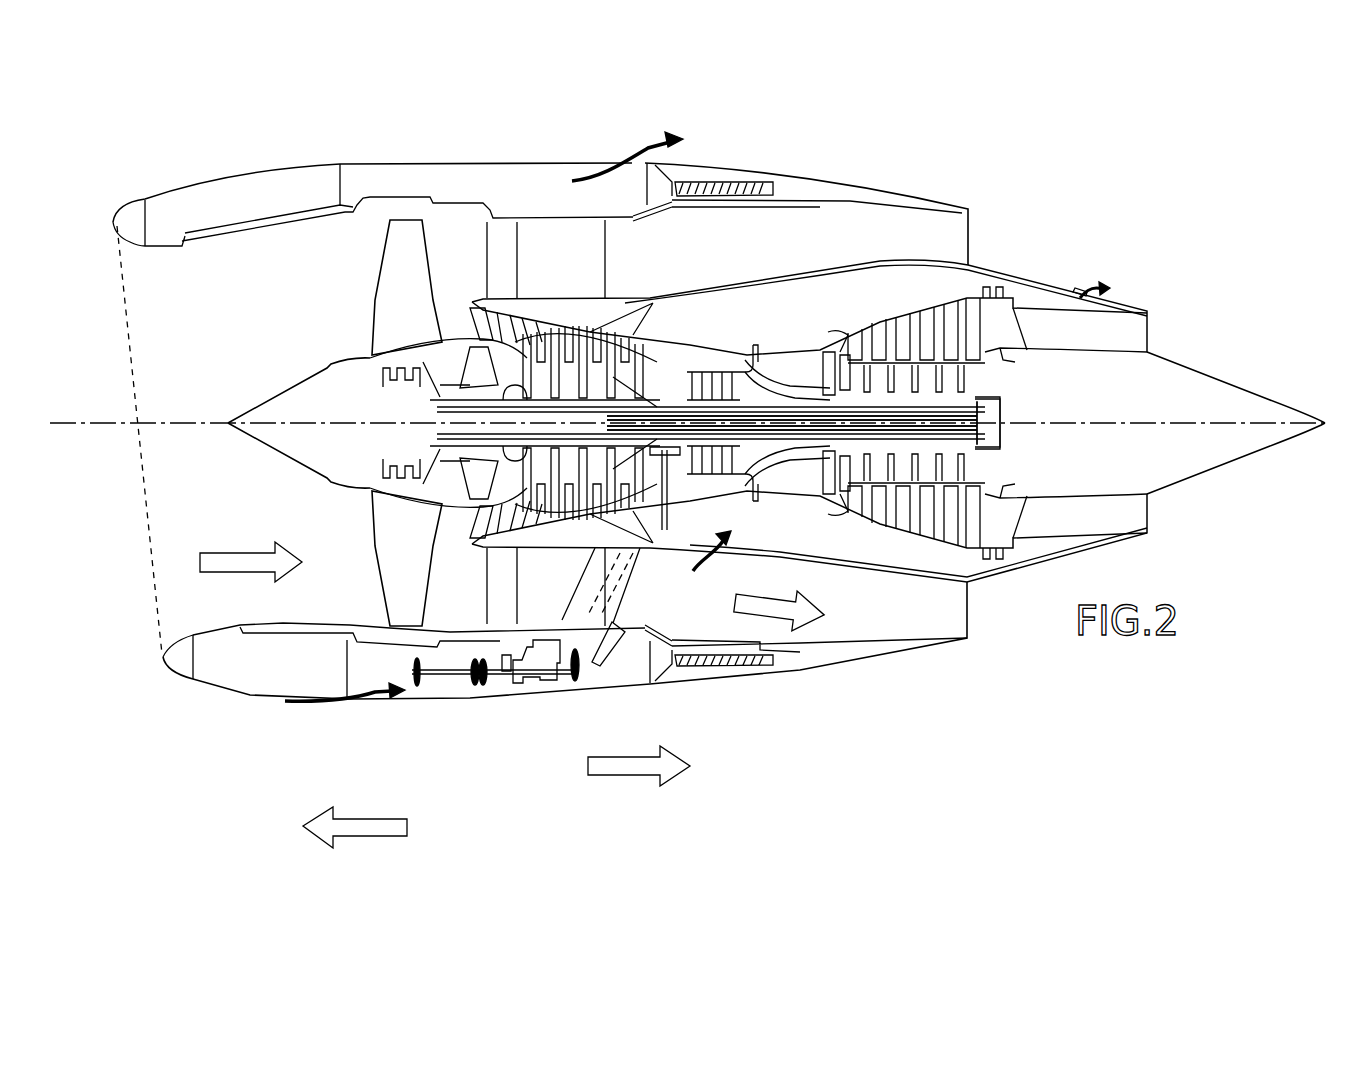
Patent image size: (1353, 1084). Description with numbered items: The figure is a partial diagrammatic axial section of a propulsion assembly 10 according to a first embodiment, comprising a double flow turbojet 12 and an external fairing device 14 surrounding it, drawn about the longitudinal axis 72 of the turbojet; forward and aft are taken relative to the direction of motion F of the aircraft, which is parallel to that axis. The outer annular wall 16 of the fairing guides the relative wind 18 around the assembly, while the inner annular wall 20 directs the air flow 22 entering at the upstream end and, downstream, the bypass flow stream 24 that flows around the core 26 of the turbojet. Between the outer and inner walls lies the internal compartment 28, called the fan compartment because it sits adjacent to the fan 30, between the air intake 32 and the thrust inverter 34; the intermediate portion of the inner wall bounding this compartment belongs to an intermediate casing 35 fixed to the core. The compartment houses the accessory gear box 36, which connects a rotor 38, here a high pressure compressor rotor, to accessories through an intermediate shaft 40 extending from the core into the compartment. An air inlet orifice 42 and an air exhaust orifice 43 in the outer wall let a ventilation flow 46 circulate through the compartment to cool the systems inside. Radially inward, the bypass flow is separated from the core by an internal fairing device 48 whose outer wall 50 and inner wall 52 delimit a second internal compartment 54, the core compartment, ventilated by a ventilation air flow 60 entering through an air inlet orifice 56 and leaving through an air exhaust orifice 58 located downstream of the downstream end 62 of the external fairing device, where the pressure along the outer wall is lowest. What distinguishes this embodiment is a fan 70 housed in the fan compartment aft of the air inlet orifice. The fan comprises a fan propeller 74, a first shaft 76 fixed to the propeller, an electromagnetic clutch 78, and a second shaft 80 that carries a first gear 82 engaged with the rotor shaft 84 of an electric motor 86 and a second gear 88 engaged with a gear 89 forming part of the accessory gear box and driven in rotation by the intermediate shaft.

The propulsion assembly 10 is at (862, 747).
The double flow turbojet 12 is at (294, 362).
The external fairing device 14 is at (150, 594).
The outer annular wall 16 is at (214, 688).
The relative wind 18 is at (633, 778).
The inner annular wall 20 is at (205, 633).
The air flow 22 is at (235, 553).
The bypass flow stream 24 is at (735, 608).
The core 26 is at (768, 347).
The internal compartment 28 is at (638, 668).
The fan 30 is at (361, 283).
The air intake 32 is at (257, 690).
The thrust inverter 34 is at (810, 660).
The intermediate casing 35 is at (456, 218).
The accessory gear box 36 is at (665, 678).
The rotor 38 is at (750, 446).
The intermediate shaft 40 is at (597, 587).
The air inlet orifice 42 is at (373, 698).
The air exhaust orifice 43 is at (632, 160).
The ventilation flow 46 is at (583, 162).
The internal fairing device 48 is at (670, 291).
The outer wall 50 is at (727, 288).
The inner wall 52 is at (880, 315).
The internal compartment 54 is at (824, 327).
The air inlet orifice 56 is at (712, 557).
The air exhaust orifice 58 is at (1076, 289).
The ventilation air flow 60 is at (1100, 284).
The downstream end 62 is at (975, 640).
The fan 70 is at (403, 665).
The longitudinal axis 72 is at (93, 418).
The fan propeller 74 is at (417, 686).
The first shaft 76 is at (455, 685).
The electromagnetic clutch 78 is at (487, 690).
The second shaft 80 is at (497, 684).
The first gear 82 is at (530, 684).
The rotor shaft 84 is at (518, 650).
The electric motor 86 is at (497, 657).
The second gear 88 is at (575, 684).
The gear 89 is at (578, 655).
The direction of motion F is at (367, 838).